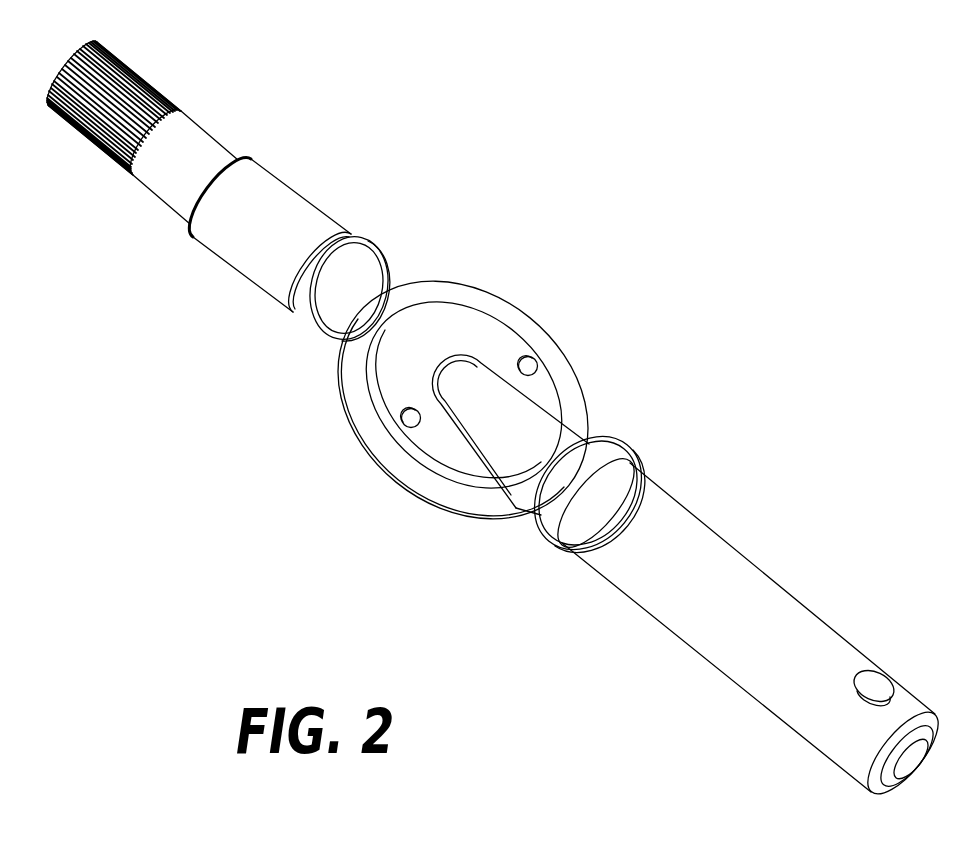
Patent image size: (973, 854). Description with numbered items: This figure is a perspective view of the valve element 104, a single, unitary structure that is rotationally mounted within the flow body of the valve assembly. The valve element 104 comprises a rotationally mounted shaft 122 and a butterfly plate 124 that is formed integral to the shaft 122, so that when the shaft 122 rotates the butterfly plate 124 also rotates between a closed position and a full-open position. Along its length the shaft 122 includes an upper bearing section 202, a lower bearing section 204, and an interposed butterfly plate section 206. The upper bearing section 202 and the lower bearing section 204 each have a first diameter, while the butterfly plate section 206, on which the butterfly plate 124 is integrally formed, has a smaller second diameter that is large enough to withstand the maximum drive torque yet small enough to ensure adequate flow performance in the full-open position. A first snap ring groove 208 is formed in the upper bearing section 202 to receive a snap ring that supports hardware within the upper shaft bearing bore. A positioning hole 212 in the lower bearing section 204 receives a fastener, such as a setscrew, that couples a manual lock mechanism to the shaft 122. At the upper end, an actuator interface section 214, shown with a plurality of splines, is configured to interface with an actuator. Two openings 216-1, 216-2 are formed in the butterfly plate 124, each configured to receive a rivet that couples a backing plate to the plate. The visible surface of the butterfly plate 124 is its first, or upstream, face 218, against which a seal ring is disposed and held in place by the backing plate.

The valve element 104 is at (703, 82).
The shaft 122 is at (748, 565).
The butterfly plate 124 is at (550, 345).
The upper bearing section 202 is at (288, 333).
The lower bearing section 204 is at (843, 805).
The butterfly plate section 206 is at (508, 557).
The first snap ring groove 208 is at (350, 236).
The positioning hole 212 is at (874, 678).
The actuator interface section 214 is at (110, 35).
The opening 216-1 is at (413, 408).
The opening 216-2 is at (528, 357).
The first face 218 is at (575, 408).